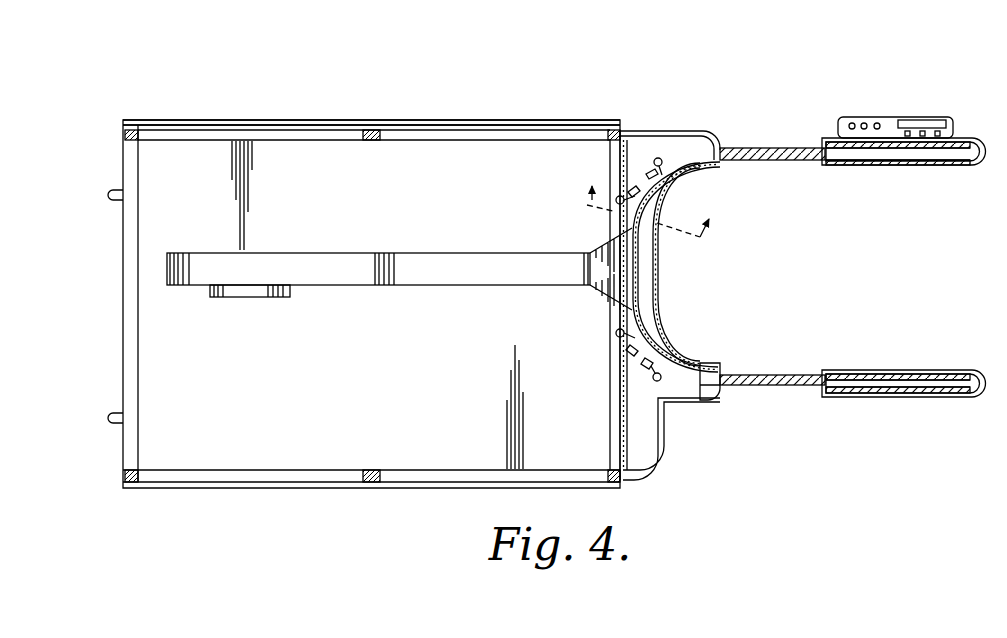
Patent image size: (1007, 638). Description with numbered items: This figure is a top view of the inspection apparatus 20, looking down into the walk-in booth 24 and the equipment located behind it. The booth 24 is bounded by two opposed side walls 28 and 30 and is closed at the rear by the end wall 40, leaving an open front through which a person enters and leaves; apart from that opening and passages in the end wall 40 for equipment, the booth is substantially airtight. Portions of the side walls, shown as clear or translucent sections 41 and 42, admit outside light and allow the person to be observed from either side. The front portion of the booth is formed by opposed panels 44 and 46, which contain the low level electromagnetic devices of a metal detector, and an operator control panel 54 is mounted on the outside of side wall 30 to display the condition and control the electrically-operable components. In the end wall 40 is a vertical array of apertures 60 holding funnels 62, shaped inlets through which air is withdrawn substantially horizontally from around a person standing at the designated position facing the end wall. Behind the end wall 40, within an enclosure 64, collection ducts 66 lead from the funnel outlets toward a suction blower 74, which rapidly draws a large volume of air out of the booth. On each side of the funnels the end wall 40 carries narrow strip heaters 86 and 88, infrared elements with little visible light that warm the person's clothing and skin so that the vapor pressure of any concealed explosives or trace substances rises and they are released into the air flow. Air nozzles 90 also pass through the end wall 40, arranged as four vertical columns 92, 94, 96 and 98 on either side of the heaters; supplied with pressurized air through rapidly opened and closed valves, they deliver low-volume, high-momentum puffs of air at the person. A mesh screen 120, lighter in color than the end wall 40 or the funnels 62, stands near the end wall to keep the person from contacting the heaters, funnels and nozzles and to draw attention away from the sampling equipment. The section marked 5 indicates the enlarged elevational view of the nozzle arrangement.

The section line 5- 5 is at (652, 200).
The inspection apparatus 20 is at (310, 101).
The walk-in booth 24 is at (752, 103).
The side wall 28 is at (926, 398).
The side wall 30 is at (966, 138).
The end wall 40 is at (706, 398).
The clear section 41 is at (810, 386).
The clear section 42 is at (806, 148).
The panel 44 is at (890, 373).
The panel 46 is at (940, 166).
The operator control panel 54 is at (890, 117).
The aperture 60 is at (608, 302).
The funnel 62 is at (605, 246).
The enclosure 64 is at (183, 120).
The collection duct 66 is at (406, 286).
The suction blower 74 is at (256, 298).
The strip heater 86 is at (646, 360).
The strip heater 88 is at (643, 170).
The air nozzle 90 is at (656, 318).
The nozzle column 92 is at (664, 370).
The nozzle column 94 is at (616, 333).
The nozzle column 96 is at (612, 130).
The nozzle column 98 is at (662, 165).
The mesh screen 120 is at (672, 343).